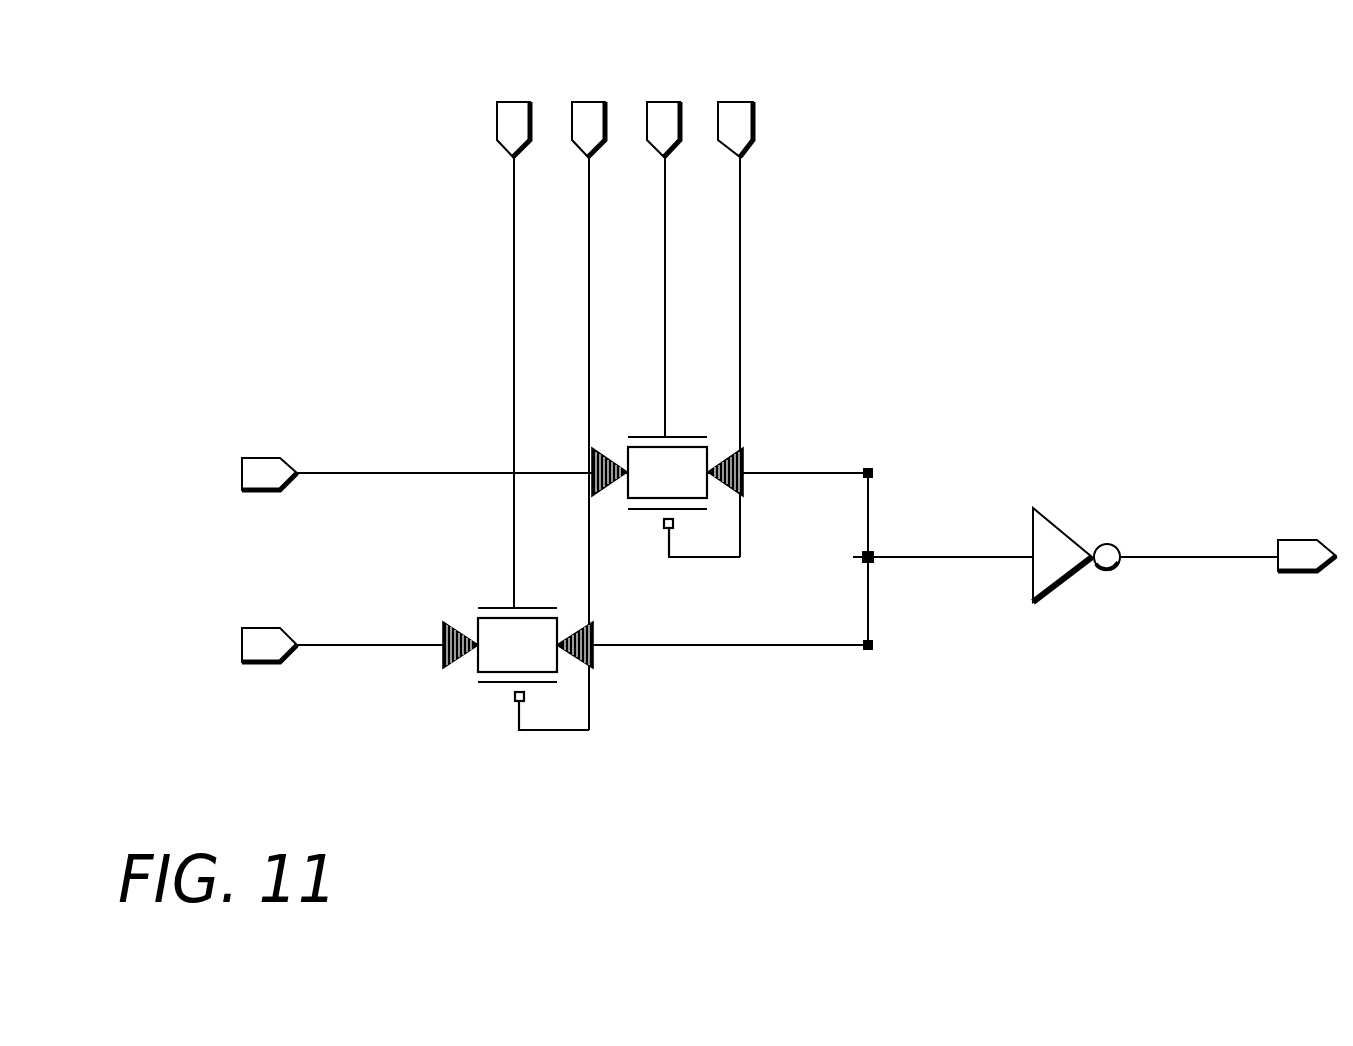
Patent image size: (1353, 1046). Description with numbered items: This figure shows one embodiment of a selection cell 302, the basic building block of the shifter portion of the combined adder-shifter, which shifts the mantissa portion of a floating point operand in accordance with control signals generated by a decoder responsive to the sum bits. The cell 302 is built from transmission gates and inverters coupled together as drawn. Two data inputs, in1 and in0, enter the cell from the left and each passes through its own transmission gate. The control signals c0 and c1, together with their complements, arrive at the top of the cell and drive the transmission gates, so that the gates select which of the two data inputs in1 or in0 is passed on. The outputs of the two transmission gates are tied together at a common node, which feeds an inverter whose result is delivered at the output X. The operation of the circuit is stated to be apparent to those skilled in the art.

The selection cell 302 is at (1178, 238).
The control signal c0 is at (513, 341).
The control signal c1 is at (663, 256).
The data input pin in1 is at (555, 470).
The data input pin in0 is at (555, 642).
The output pin X is at (1228, 547).